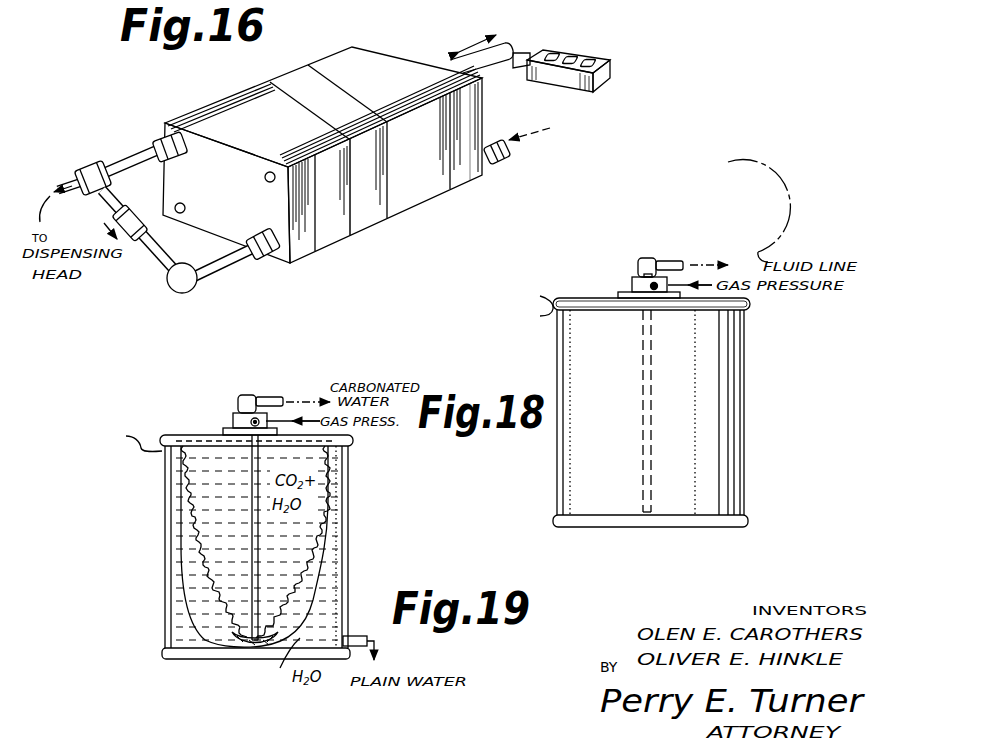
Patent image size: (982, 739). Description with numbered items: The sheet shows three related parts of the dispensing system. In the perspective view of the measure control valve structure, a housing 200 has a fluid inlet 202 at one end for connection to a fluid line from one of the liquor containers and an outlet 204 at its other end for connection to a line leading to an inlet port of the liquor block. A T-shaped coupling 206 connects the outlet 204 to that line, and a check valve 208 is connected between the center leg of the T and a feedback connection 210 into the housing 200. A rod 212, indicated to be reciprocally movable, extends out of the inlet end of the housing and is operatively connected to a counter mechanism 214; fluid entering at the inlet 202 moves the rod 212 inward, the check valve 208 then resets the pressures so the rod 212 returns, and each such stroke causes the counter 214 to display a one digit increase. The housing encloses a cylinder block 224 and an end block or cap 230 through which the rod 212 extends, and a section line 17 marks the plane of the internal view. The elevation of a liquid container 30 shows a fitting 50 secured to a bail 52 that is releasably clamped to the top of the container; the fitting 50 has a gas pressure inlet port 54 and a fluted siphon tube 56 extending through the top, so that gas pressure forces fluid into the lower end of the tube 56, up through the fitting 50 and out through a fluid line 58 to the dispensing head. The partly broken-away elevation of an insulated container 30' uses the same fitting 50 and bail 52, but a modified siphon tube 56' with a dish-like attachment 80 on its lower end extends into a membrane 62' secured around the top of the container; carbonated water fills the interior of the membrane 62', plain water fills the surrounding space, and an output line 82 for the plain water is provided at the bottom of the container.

In FIG. 16, the section line 17- 17 is at (157, 127).
In FIG. 16, the housing 200 is at (375, 218).
In FIG. 16, the fluid inlet 202 is at (506, 157).
In FIG. 16, the outlet 204 is at (168, 135).
In FIG. 16, the T-shaped coupling 206 is at (104, 164).
In FIG. 16, the check valve 208 is at (125, 207).
In FIG. 16, the feedback connection 210 is at (270, 260).
In FIG. 16, the rod 212 is at (507, 44).
In FIG. 16, the counter mechanism 214 is at (603, 53).
In FIG. 16, the cylinder block 224 is at (421, 194).
In FIG. 16, the end block or cap 230 is at (476, 176).
In FIG. 18, the liquid container 30 is at (670, 412).
In FIG. 19, the insulated container 30' is at (278, 547).
In FIG. 18, the fitting 50 is at (630, 277).
In FIG. 19, the fitting 50 is at (228, 416).
In FIG. 18, the bail 52 is at (534, 299).
In FIG. 19, the bail 52 is at (132, 439).
In FIG. 18, the gas pressure inlet port 54 is at (654, 289).
In FIG. 18, the siphon tube 56 is at (624, 411).
In FIG. 19, the modified siphon tube 56' is at (189, 537).
In FIG. 18, the fluid line 58 is at (675, 260).
In FIG. 19, the fluid line 58 is at (270, 396).
In FIG. 19, the membrane 62' is at (225, 546).
In FIG. 19, the dish-like attachment 80 is at (248, 642).
In FIG. 19, the output line 82 is at (355, 636).